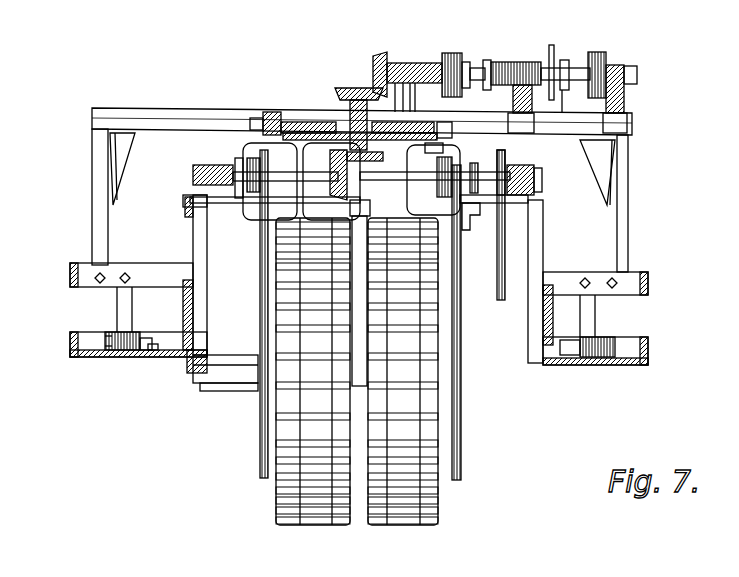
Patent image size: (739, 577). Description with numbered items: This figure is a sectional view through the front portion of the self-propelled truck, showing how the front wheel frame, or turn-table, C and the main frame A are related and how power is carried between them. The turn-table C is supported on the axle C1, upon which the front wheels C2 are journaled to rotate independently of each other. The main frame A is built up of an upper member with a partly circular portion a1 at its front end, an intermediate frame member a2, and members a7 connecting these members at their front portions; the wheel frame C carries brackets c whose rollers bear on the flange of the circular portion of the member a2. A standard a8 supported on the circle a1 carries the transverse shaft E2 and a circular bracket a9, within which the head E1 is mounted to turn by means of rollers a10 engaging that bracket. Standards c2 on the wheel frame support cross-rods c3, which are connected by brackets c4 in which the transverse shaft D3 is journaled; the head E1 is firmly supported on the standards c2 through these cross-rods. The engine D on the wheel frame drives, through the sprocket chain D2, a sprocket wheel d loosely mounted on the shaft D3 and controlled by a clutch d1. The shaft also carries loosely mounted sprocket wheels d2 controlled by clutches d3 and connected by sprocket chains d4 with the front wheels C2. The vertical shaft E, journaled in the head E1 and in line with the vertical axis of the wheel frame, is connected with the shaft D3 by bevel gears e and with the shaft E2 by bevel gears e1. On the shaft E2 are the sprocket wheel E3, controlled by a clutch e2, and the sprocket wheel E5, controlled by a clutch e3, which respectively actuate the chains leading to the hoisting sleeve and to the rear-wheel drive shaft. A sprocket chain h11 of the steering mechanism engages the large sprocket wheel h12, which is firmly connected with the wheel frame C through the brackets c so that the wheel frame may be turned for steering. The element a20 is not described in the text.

The top cross beam a20 is at (178, 88).
The standard a8 is at (92, 170).
The partly circular portion a1 is at (648, 280).
The frame members a7 is at (122, 312).
The main frame A is at (648, 340).
The intermediate frame-member a2 is at (70, 340).
The large sprocket-wheel h12 is at (110, 332).
The sprocket-chain h11 is at (105, 345).
The brackets c is at (140, 350).
The turn-table or front wheel frame C is at (190, 358).
The axle C1 is at (225, 383).
The standards c2 is at (193, 240).
The rollers a10 is at (280, 112).
The circular member or bracket a9 is at (256, 118).
The head E1 is at (312, 122).
The vertical shaft E is at (358, 88).
The bevel gears e1 is at (382, 56).
The transverse shaft E2 is at (455, 38).
The clutch e2 is at (488, 60).
The sprocket-wheel E3 is at (505, 62).
The clutch e3 is at (556, 60).
The sprocket-wheel E5 is at (597, 52).
The brackets c4 is at (208, 165).
The engine D is at (238, 158).
The clutches d3 is at (252, 192).
The sprocket-wheels d2 is at (450, 155).
The bevel gears e is at (345, 170).
The cross-rods c3 is at (370, 210).
The sprocket-chains d4 is at (260, 330).
The clutch d1 is at (474, 168).
The sprocket-wheel d is at (504, 170).
The transverse shaft D3 is at (542, 180).
The sprocket-chain D2 is at (500, 250).
The front wheels C2 is at (350, 525).